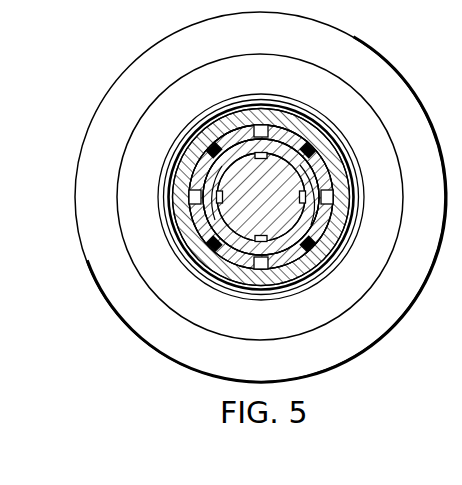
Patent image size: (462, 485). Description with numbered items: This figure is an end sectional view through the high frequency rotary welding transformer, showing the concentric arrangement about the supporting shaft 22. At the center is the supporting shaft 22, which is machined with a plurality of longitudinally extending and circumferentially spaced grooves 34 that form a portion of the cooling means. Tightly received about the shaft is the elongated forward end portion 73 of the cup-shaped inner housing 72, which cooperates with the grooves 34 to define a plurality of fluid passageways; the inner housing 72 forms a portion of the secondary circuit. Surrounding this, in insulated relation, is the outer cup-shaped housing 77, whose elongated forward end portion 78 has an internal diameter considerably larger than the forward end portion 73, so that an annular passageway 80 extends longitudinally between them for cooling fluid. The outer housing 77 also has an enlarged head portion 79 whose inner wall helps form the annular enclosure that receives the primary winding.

The outer cup-shaped housing 77 is at (334, 28).
The enlarged head portion 79 is at (382, 139).
The supporting shaft 22 is at (322, 262).
The elongated forward end portion 73 is at (264, 190).
The cup-shaped inner housing 72 is at (208, 240).
The elongated forward end portion 78 is at (340, 193).
The annular passageway 80 is at (260, 124).
The grooves 34 is at (190, 198).